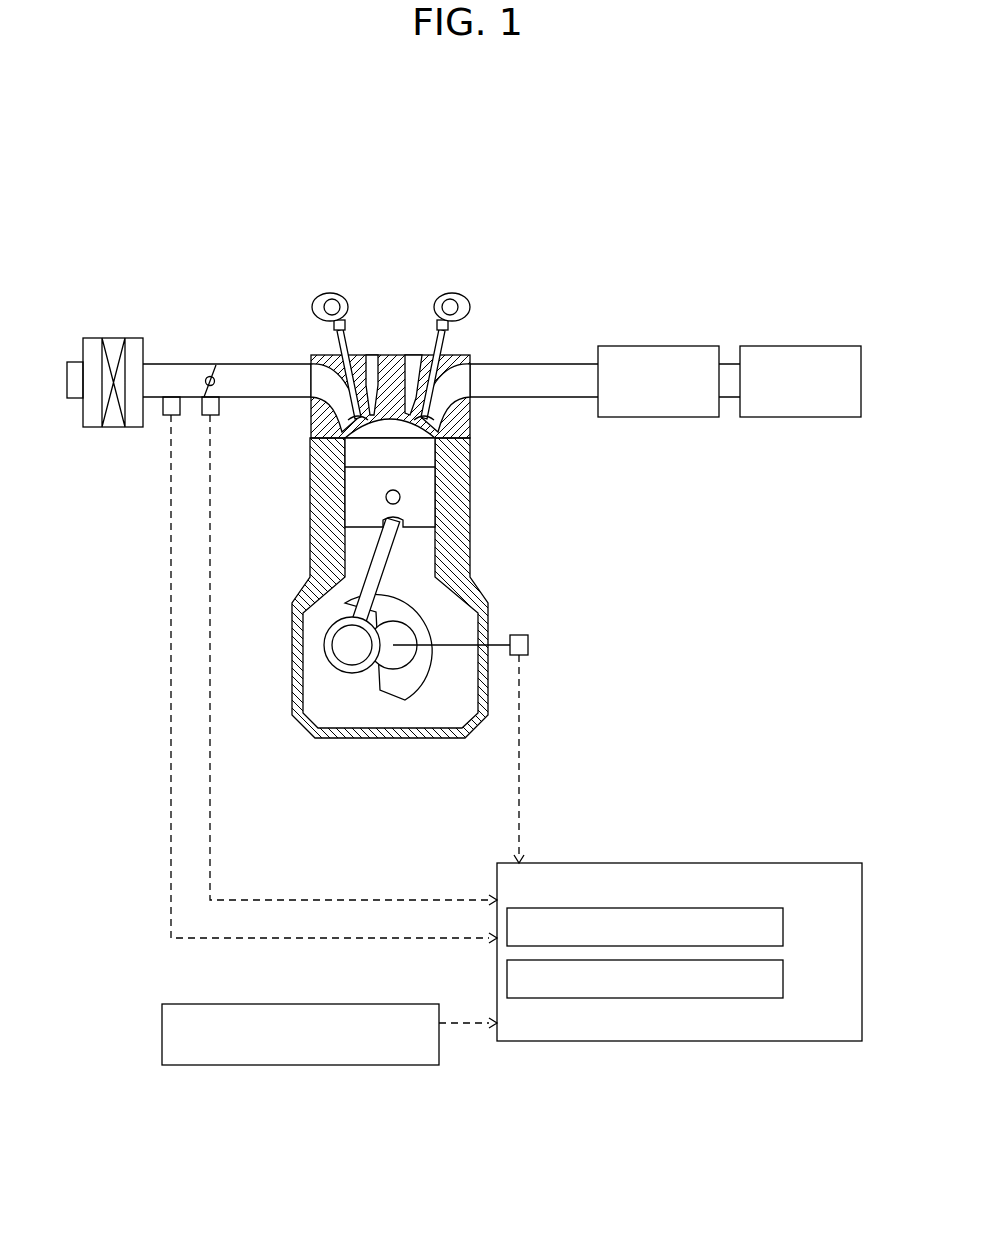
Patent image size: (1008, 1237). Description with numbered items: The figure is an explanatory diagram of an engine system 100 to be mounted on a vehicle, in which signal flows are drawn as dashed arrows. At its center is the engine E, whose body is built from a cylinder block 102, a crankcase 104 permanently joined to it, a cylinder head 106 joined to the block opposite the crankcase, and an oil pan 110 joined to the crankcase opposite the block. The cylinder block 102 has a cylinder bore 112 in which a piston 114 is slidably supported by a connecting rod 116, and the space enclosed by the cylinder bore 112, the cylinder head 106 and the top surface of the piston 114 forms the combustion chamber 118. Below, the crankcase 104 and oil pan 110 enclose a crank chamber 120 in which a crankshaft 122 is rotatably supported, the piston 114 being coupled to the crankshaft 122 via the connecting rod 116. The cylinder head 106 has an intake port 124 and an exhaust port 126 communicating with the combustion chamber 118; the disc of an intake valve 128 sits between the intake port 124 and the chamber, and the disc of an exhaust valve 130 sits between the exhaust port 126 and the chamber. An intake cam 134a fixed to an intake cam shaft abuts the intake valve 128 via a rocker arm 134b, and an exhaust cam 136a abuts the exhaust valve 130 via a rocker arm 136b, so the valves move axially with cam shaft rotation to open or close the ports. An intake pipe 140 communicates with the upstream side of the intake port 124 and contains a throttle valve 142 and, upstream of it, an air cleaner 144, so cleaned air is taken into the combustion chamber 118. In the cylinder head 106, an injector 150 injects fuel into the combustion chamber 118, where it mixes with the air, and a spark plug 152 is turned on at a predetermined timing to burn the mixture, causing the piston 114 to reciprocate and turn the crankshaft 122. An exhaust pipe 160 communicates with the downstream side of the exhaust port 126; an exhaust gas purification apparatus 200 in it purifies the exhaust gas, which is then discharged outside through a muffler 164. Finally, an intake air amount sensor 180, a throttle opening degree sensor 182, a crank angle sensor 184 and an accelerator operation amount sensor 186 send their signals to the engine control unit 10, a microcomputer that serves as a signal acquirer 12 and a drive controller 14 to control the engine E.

The engine control unit 10 is at (815, 863).
The signal acquirer 12 is at (785, 928).
The drive controller 14 is at (785, 980).
The engine system 100 is at (163, 146).
The cylinder block 102 is at (471, 505).
The crankcase 104 is at (471, 565).
The cylinder head 106 is at (318, 355).
The oil pan 110 is at (292, 693).
The cylinder bore 112 is at (443, 440).
The piston 114 is at (362, 500).
The connecting rod 116 is at (298, 650).
The combustion chamber 118 is at (417, 458).
The crank chamber 120 is at (340, 705).
The crankshaft 122 is at (400, 672).
The intake port 124 is at (308, 380).
The exhaust port 126 is at (472, 380).
The intake valve 128 is at (328, 348).
The exhaust valve 130 is at (452, 352).
The intake cam 134a is at (326, 292).
The rocker arm 134b is at (345, 320).
The exhaust cam 136a is at (455, 292).
The rocker arm 136b is at (440, 322).
The intake pipe 140 is at (157, 363).
The throttle valve 142 is at (207, 368).
The air cleaner 144 is at (92, 430).
The injector 150 is at (372, 352).
The spark plug 152 is at (412, 355).
The exhaust pipe 160 is at (566, 362).
The muffler 164 is at (845, 345).
The intake air amount sensor 180 is at (160, 408).
The throttle opening degree sensor 182 is at (221, 408).
The crank angle sensor 184 is at (530, 645).
The accelerator operation amount sensor 186 is at (393, 1004).
The exhaust gas purification apparatus 200 is at (700, 345).
The engine E is at (397, 220).